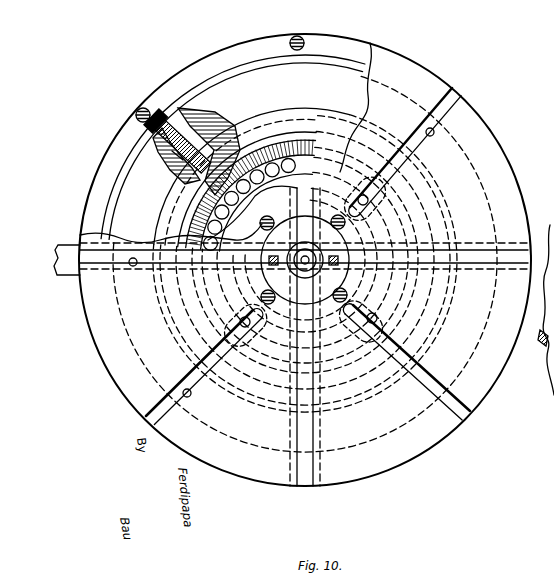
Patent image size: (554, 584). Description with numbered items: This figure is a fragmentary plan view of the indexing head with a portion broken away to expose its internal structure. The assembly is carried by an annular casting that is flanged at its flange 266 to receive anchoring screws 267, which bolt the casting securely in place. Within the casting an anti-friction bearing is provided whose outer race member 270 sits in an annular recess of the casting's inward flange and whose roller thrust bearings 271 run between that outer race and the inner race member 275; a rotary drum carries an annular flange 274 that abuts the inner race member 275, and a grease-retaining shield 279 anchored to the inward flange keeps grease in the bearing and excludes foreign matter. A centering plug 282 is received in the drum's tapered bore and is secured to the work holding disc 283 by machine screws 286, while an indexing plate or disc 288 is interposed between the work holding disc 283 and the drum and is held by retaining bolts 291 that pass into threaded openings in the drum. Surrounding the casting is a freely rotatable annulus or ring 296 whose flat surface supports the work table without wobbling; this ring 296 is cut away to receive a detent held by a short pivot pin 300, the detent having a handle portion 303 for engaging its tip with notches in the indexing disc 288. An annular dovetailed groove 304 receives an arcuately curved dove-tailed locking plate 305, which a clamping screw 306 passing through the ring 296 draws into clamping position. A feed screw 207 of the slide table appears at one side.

The feed screw 207 is at (546, 342).
The flange 266 is at (180, 84).
The anchoring screws 267 is at (137, 110).
The outer race member 270 is at (296, 136).
The roller thrust bearings 271 is at (322, 136).
The annular flange 274 is at (266, 128).
The inner race member 275 is at (258, 205).
The grease-retaining shield 279 is at (366, 70).
The centering plug 282 is at (312, 266).
The work holding disc 283 is at (488, 147).
The machine screws 286 is at (344, 308).
The indexing plate or disc 288 is at (430, 136).
The retaining bolts 291 is at (341, 230).
The annulus or ring 296 is at (135, 193).
The pivot pin 300 is at (135, 268).
The handle portion 303 is at (62, 282).
The annular dovetailed groove 304 is at (228, 136).
The dove-tailed locking plate 305 is at (216, 142).
The clamping screw 306 is at (170, 153).